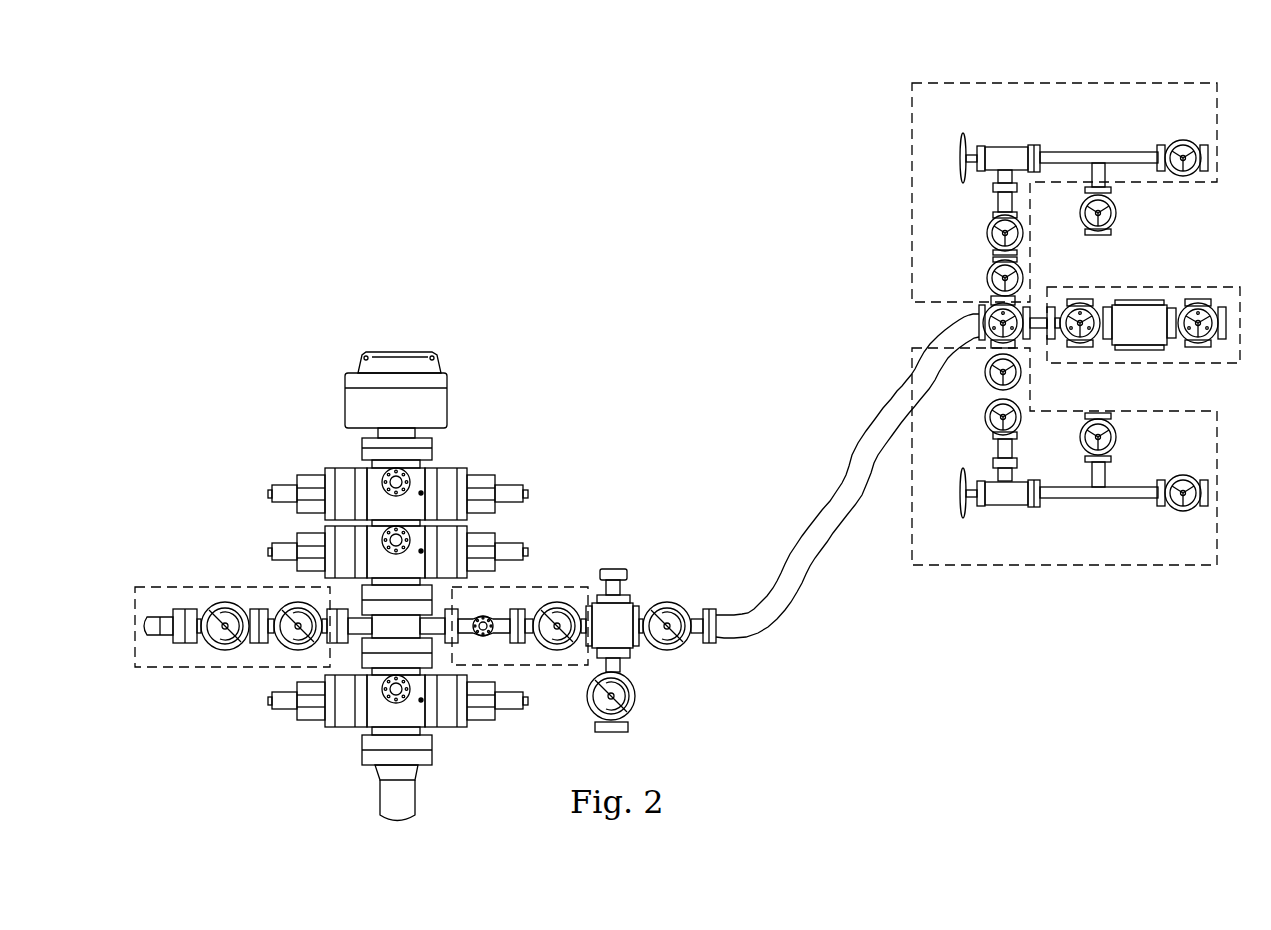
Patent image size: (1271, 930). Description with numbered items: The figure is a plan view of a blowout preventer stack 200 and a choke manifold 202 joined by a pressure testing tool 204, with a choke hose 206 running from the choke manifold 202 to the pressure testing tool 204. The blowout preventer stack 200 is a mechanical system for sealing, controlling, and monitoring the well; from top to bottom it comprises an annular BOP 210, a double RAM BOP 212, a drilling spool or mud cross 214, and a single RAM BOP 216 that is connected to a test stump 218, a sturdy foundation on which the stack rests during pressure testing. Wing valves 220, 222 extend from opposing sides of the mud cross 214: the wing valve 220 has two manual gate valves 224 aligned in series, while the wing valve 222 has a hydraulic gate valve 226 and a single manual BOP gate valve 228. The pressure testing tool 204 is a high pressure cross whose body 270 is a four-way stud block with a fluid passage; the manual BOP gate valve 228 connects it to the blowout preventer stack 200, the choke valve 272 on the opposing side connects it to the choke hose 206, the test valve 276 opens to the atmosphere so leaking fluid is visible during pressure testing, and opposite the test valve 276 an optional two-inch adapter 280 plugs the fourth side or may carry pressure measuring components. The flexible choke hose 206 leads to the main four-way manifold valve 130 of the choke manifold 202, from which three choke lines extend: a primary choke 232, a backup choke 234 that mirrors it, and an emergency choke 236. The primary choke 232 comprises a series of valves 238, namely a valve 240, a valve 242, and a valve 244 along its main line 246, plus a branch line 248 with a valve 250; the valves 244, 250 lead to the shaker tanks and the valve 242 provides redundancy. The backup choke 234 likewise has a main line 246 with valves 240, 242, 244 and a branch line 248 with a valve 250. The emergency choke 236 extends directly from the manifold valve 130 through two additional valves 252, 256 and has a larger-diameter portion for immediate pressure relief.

The blowout preventer stack 200 is at (355, 228).
The choke manifold 202 is at (884, 172).
The pressure testing tool 204 is at (613, 500).
The choke hose 206 is at (825, 548).
The annular BOP 210 is at (345, 402).
The double RAM BOP 212 is at (342, 468).
The mud cross 214 is at (356, 650).
The single RAM BOP 216 is at (344, 727).
The test stump 218 is at (437, 758).
The wing valve 220 is at (213, 672).
The wing valve 222 is at (544, 672).
The manual gate valves 224 is at (300, 602).
The hydraulic gate valve 226 is at (483, 637).
The manual BOP gate valve 228 is at (555, 602).
The inlet valve 130 is at (976, 323).
The primary choke 232 is at (1146, 573).
The backup choke 234 is at (1146, 75).
The emergency choke 236 is at (1150, 370).
The series of valves 238 is at (1048, 384).
The valve 240 is at (986, 277).
The valve 242 is at (986, 233).
The valve 244 is at (1180, 140).
The main line 246 is at (1113, 151).
The branch line 248 is at (1108, 175).
The valve 250 is at (1118, 217).
The valve 252 is at (1080, 300).
The valve 256 is at (1200, 300).
The body 270 is at (618, 642).
The choke valve 272 is at (670, 603).
The test valve 276 is at (633, 696).
The two-inch adapter 280 is at (622, 590).